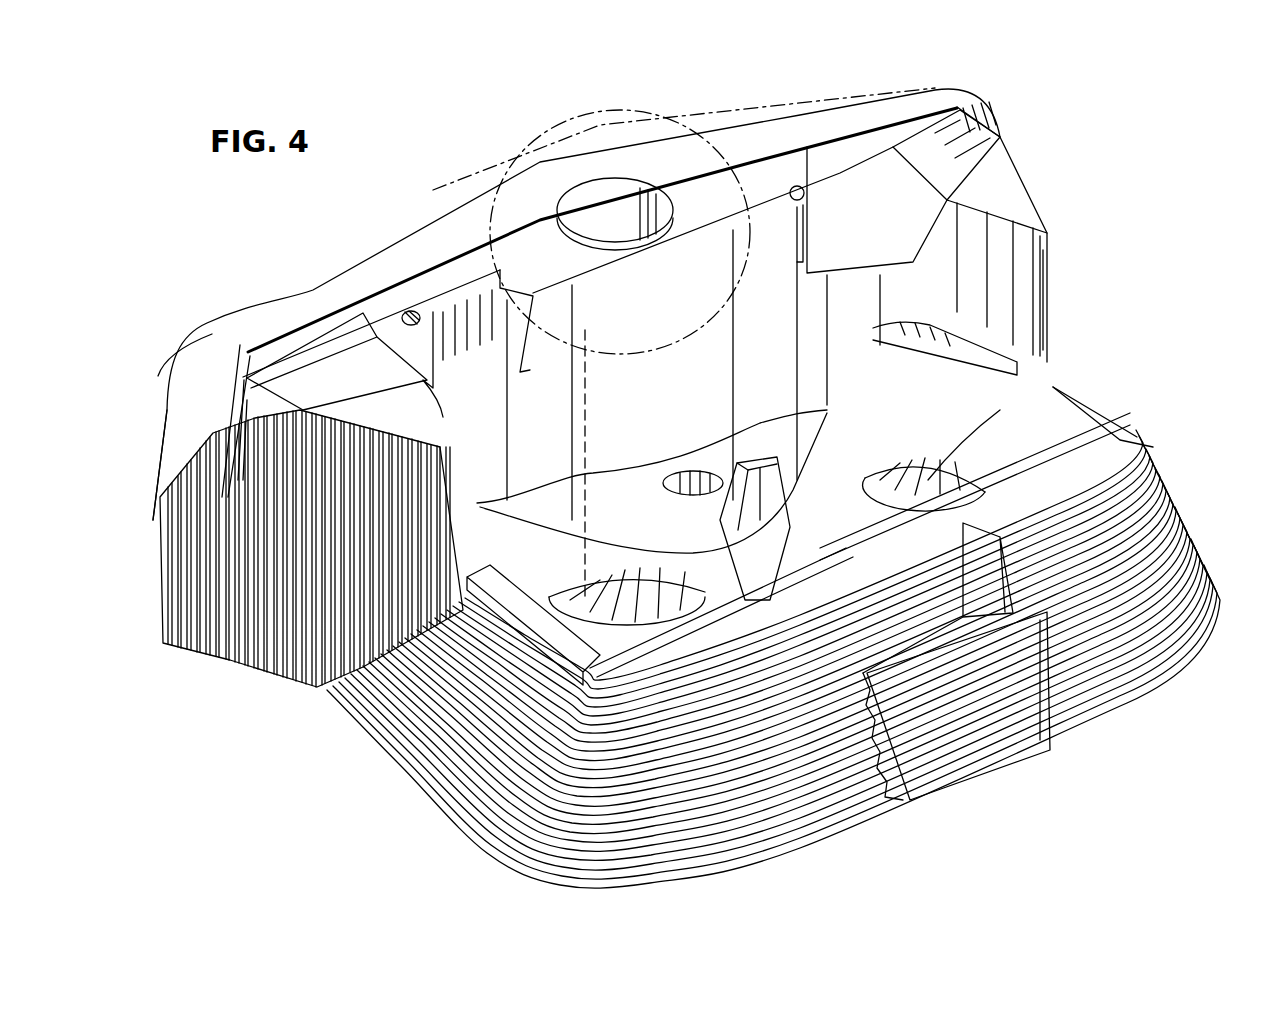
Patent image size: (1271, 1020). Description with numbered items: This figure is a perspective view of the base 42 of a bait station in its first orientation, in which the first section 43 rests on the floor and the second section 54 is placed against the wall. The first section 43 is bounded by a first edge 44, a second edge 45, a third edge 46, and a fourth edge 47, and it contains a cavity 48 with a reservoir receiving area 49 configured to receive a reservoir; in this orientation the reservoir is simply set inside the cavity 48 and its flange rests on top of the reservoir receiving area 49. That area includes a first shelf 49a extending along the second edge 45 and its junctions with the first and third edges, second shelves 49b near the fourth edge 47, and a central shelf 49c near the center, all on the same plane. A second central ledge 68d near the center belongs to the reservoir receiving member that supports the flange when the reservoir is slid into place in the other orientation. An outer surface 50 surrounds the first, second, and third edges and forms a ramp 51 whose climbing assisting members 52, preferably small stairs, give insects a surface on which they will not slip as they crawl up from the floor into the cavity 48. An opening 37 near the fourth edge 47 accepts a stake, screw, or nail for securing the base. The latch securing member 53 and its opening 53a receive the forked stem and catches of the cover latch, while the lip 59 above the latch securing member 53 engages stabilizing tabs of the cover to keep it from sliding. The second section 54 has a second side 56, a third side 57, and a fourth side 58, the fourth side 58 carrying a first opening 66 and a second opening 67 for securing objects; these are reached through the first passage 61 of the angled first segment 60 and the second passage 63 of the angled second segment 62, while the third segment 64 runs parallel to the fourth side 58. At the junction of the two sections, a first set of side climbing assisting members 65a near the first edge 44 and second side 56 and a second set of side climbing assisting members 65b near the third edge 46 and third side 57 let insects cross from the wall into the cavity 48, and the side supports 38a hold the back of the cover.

The opening 37 is at (696, 480).
The side supports 38a is at (925, 150).
The base 42 is at (1003, 100).
The first section 43 is at (1197, 520).
The first edge 44 is at (568, 648).
The second edge 45 is at (700, 618).
The third edge 46 is at (1122, 416).
The fourth edge 47 is at (597, 472).
The cavity 48 is at (573, 567).
The reservoir receiving area 49 is at (621, 585).
The first shelf 49a is at (1085, 410).
The second shelf 49b is at (927, 327).
The central shelf 49c is at (764, 461).
The outer surface 50 is at (518, 840).
The ramp 51 is at (565, 830).
The climbing assisting members 52 is at (640, 815).
The latch securing member 53 is at (887, 700).
The opening 53a is at (913, 655).
The second section 54 is at (1065, 248).
The second side 56 is at (180, 413).
The third side 57 is at (1002, 126).
The fourth side 58 is at (879, 230).
The lip 59 is at (965, 650).
The first segment 60 is at (525, 447).
The first passage 61 is at (527, 347).
The second segment 62 is at (834, 322).
The second passage 63 is at (796, 264).
The third segment 64 is at (656, 402).
The first set of side climbing assisting members 65a is at (235, 636).
The second set of side climbing assisting members 65b is at (1036, 191).
The first opening 66 is at (412, 310).
The second opening 67 is at (804, 197).
The second central ledge 68d is at (790, 497).